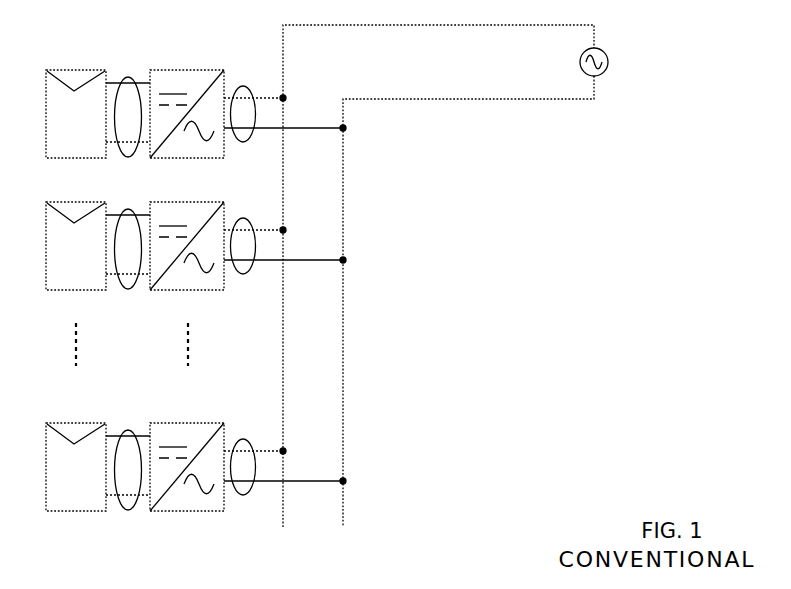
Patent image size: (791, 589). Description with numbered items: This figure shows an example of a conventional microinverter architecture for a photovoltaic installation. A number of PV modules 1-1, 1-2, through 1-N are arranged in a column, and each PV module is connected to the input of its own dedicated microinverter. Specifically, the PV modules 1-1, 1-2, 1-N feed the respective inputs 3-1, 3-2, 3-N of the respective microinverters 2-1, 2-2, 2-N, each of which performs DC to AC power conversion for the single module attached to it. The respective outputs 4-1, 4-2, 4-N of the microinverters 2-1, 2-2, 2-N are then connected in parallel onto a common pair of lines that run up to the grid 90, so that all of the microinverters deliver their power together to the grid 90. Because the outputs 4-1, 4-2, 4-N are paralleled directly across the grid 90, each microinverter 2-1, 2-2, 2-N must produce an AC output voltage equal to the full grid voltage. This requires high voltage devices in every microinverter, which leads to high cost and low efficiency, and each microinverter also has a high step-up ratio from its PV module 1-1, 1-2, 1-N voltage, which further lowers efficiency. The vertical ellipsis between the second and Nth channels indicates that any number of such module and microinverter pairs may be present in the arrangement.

The PV module 1-1 is at (46, 87).
The PV module 1-2 is at (61, 237).
The PV module 1-N is at (61, 458).
The microinverter 2-1 is at (225, 146).
The microinverter 2-2 is at (199, 237).
The microinverter 2-N is at (200, 458).
The input 3-1 is at (125, 80).
The input 3-2 is at (121, 234).
The input 3-N is at (121, 455).
The output 4-1 is at (247, 90).
The output 4-2 is at (251, 233).
The output 4-N is at (252, 454).
The grid 90 is at (608, 52).